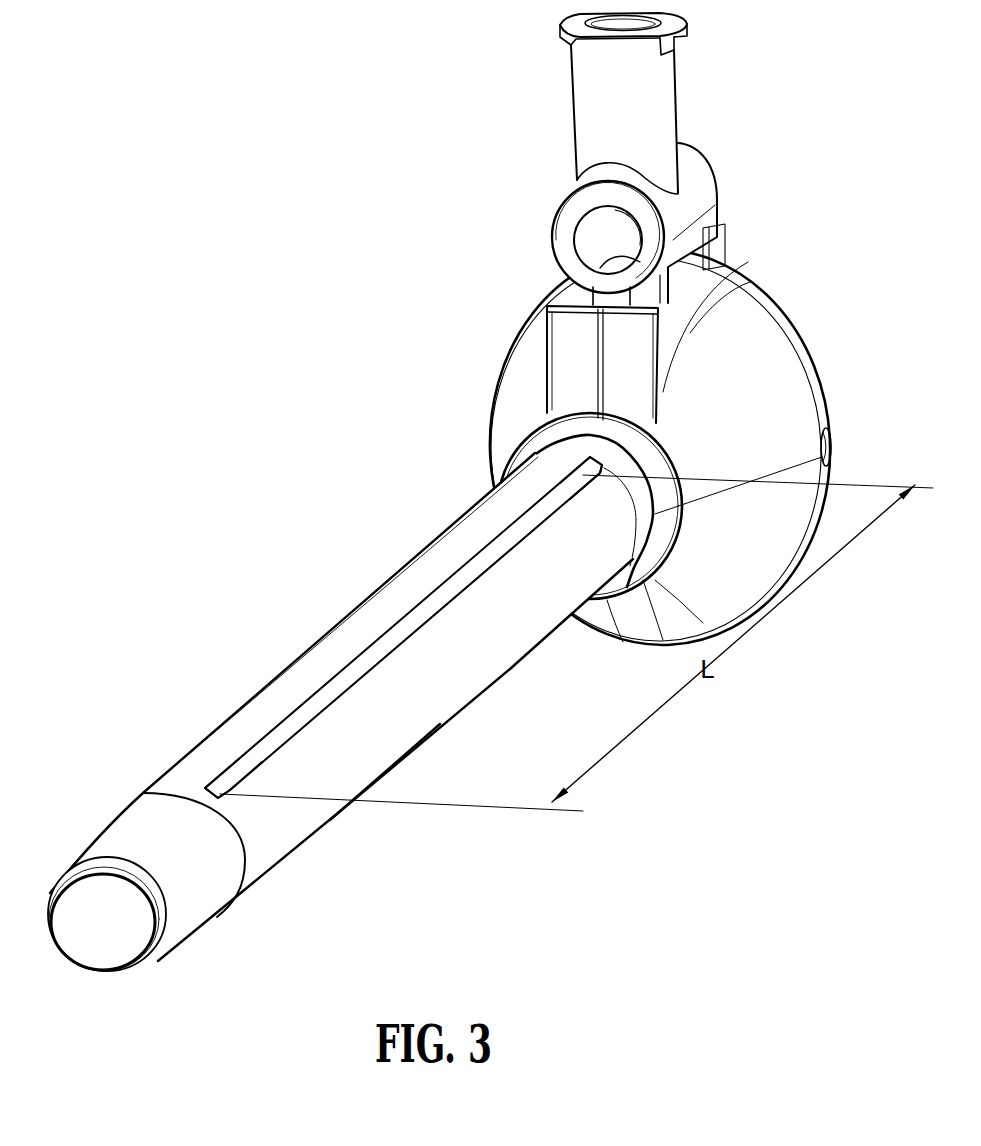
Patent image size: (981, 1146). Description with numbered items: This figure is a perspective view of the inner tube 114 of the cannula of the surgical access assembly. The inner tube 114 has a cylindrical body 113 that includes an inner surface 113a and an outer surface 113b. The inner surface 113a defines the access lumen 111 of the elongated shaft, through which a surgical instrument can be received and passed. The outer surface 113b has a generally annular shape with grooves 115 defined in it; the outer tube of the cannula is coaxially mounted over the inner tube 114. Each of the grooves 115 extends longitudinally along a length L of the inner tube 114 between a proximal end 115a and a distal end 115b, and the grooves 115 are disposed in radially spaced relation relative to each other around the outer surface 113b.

The access lumen 111 is at (73, 922).
The cylindrical body 113 is at (347, 745).
The inner surface 113a is at (112, 953).
The outer surface 113b is at (360, 757).
The inner tube 114 is at (305, 583).
The grooves 115 is at (390, 627).
The proximal end 115a is at (628, 588).
The distal end 115b is at (233, 775).